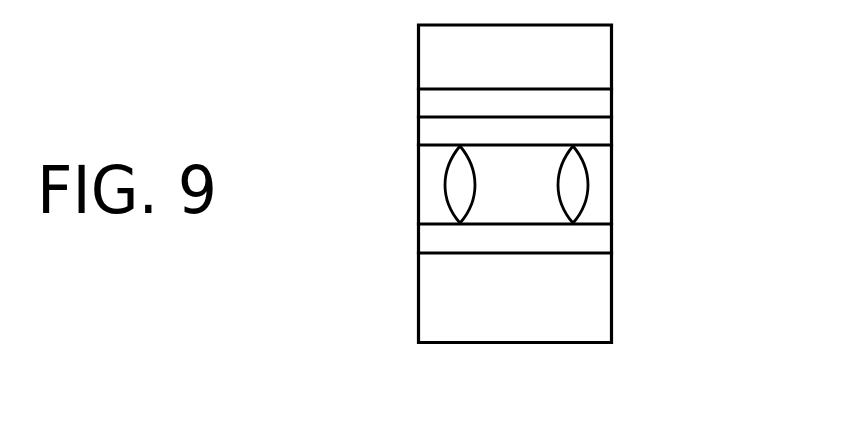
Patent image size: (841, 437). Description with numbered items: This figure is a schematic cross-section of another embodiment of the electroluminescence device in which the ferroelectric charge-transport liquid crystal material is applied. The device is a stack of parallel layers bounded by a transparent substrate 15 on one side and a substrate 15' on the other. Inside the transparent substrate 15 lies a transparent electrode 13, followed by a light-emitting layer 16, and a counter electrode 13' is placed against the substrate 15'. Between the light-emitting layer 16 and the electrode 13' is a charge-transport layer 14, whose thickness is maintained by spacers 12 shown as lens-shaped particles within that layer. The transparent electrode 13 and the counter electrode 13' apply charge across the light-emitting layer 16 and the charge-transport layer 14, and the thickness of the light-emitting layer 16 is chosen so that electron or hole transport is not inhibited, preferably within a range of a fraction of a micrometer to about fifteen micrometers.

The transparent substrate 15 is at (560, 57).
The transparent electrode 13 is at (560, 97).
The light-emitting layer 16 is at (604, 135).
The spacer 12 is at (573, 184).
The charge-transport layer 14 is at (517, 210).
The electrode (counter electrode) 13' is at (564, 235).
The substrate 15' is at (564, 298).